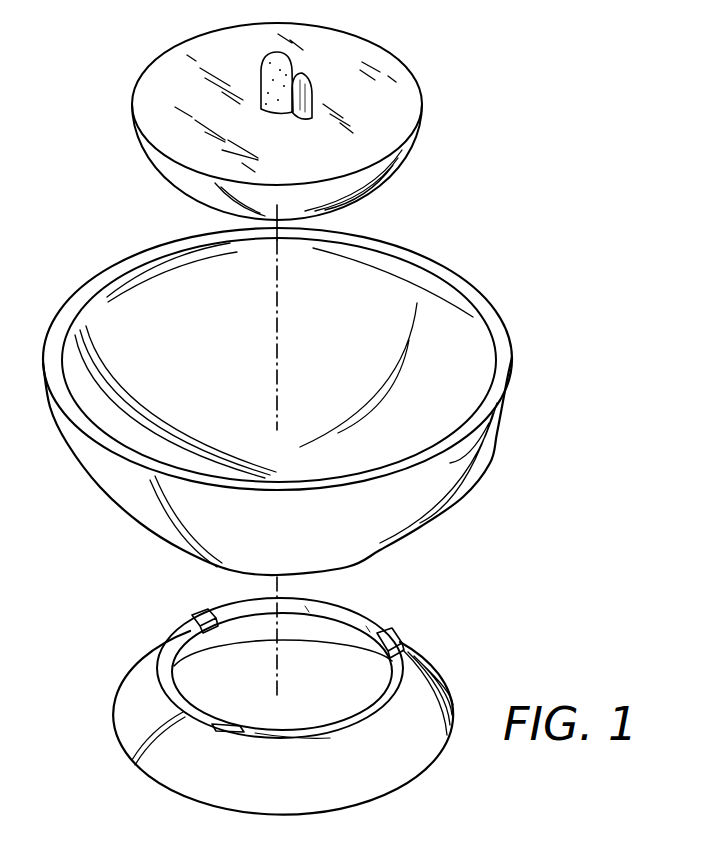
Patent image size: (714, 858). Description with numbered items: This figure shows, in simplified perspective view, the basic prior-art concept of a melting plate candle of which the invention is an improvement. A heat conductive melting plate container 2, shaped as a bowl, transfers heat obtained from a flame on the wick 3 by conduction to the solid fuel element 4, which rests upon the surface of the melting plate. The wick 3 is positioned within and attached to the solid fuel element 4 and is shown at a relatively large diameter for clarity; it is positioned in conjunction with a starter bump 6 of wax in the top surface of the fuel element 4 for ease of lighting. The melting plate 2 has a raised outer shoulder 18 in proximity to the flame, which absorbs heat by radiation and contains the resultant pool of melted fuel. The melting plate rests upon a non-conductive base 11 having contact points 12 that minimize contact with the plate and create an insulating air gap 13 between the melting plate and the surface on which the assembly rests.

The heat conductive melting plate container 2 is at (450, 268).
The wick 3 is at (260, 70).
The solid fuel element 4 is at (375, 107).
The starter bump 6 is at (308, 90).
The non-conductive base 11 is at (427, 678).
The contact points 12 is at (203, 614).
The insulating air gap 13 is at (303, 652).
The shoulder 18 is at (513, 357).